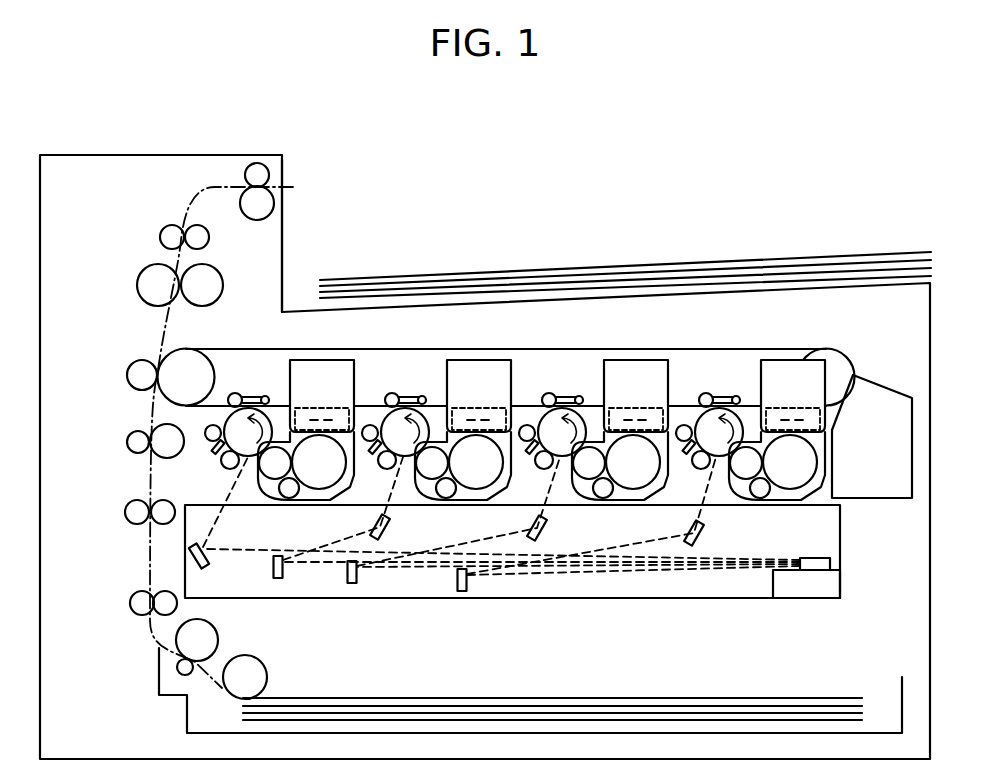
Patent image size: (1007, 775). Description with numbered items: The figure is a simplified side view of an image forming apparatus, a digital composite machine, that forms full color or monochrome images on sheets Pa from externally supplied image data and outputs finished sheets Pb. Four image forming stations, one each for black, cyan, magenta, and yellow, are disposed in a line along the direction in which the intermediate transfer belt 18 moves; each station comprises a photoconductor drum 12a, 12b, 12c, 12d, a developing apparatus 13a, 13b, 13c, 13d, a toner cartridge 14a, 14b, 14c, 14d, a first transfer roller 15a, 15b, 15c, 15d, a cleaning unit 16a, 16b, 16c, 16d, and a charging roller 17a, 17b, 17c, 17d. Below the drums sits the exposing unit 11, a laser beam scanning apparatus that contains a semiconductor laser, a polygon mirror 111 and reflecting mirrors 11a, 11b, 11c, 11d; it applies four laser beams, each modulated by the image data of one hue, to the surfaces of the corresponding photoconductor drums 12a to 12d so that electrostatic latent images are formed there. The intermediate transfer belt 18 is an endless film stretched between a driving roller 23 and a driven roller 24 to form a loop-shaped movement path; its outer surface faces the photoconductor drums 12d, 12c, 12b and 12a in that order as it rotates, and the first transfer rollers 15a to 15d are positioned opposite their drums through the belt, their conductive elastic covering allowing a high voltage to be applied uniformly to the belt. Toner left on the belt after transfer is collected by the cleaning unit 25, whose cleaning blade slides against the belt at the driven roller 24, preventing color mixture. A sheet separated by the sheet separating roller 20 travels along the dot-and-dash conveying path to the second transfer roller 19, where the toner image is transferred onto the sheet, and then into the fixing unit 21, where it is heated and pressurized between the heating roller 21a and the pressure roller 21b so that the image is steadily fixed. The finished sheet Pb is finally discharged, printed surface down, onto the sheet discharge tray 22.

The exposing unit 11 is at (541, 577).
The polygon mirror 111 is at (835, 561).
The reflecting mirror 11a is at (207, 568).
The reflecting mirror 11b is at (287, 573).
The reflecting mirror 11c is at (361, 574).
The reflecting mirror 11d is at (467, 584).
The photoconductor drum 12a is at (265, 408).
The photoconductor drum 12b is at (422, 408).
The photoconductor drum 12c is at (579, 408).
The photoconductor drum 12d is at (736, 408).
The developing apparatus 13a is at (333, 500).
The developing apparatus 13b is at (490, 500).
The developing apparatus 13c is at (647, 500).
The developing apparatus 13d is at (804, 500).
The toner cartridge 14a is at (316, 360).
The toner cartridge 14b is at (473, 360).
The toner cartridge 14c is at (630, 360).
The toner cartridge 14d is at (787, 360).
The first transfer roller 15a is at (235, 393).
The first transfer roller 15b is at (392, 393).
The first transfer roller 15c is at (549, 393).
The first transfer roller 15d is at (706, 393).
The cleaning unit 16a is at (212, 443).
The cleaning unit 16b is at (369, 443).
The cleaning unit 16c is at (526, 443).
The cleaning unit 16d is at (683, 443).
The charging roller 17a is at (247, 470).
The charging roller 17b is at (404, 470).
The charging roller 17c is at (561, 470).
The charging roller 17d is at (718, 470).
The intermediate transfer belt 18 is at (468, 365).
The second transfer roller 19 is at (128, 365).
The sheet separating roller 20 is at (259, 660).
The fixing unit 21 is at (162, 265).
The heating roller 21a is at (215, 265).
The pressure roller 21b is at (155, 264).
The sheet discharge tray 22 is at (300, 302).
The driving roller 23 is at (173, 393).
The driven roller 24 is at (838, 353).
The cleaning unit 25 is at (889, 389).
The sheet Pa is at (493, 690).
The sheet Pb is at (622, 254).